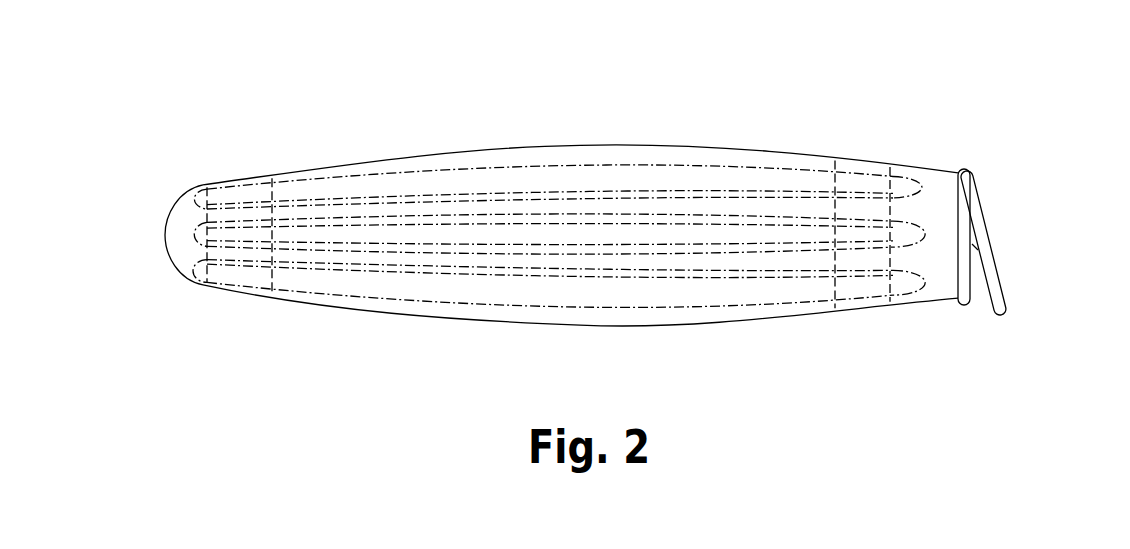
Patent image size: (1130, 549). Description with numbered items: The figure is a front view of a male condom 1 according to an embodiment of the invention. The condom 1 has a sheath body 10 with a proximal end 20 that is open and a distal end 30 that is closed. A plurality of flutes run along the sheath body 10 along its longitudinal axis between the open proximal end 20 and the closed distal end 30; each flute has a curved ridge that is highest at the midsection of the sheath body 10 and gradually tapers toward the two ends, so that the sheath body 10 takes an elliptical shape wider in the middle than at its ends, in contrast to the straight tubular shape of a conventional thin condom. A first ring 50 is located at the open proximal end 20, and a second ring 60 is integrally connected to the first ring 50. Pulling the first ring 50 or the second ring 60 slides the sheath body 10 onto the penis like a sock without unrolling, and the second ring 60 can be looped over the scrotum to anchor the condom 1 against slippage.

The male condom 1 is at (275, 135).
The sheath body 10 is at (327, 307).
The proximal end 20 is at (992, 240).
The distal end 30 is at (168, 233).
The first ring 50 is at (972, 280).
The second ring 60 is at (1002, 288).